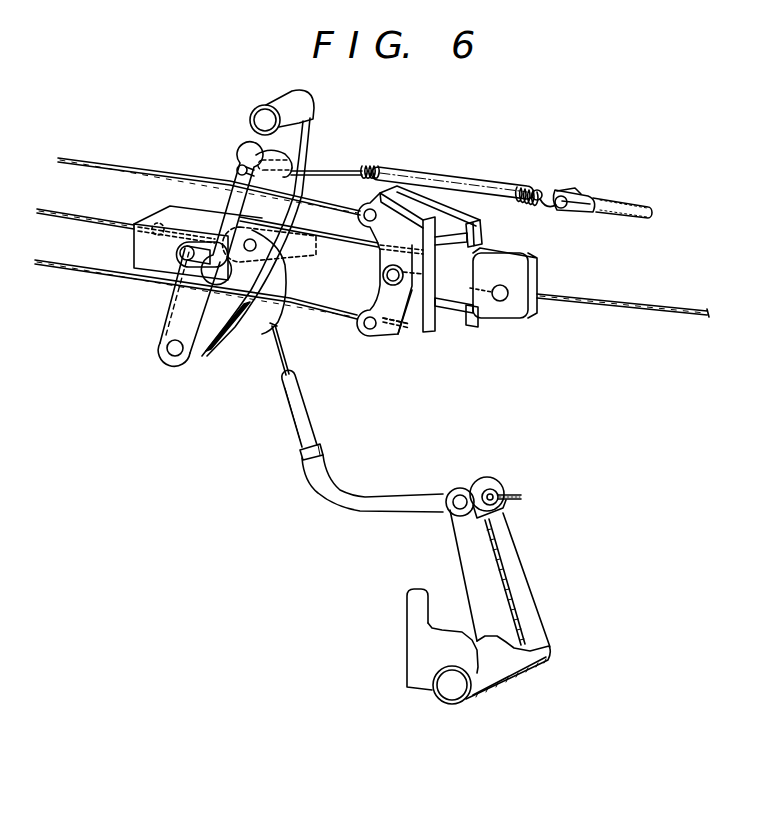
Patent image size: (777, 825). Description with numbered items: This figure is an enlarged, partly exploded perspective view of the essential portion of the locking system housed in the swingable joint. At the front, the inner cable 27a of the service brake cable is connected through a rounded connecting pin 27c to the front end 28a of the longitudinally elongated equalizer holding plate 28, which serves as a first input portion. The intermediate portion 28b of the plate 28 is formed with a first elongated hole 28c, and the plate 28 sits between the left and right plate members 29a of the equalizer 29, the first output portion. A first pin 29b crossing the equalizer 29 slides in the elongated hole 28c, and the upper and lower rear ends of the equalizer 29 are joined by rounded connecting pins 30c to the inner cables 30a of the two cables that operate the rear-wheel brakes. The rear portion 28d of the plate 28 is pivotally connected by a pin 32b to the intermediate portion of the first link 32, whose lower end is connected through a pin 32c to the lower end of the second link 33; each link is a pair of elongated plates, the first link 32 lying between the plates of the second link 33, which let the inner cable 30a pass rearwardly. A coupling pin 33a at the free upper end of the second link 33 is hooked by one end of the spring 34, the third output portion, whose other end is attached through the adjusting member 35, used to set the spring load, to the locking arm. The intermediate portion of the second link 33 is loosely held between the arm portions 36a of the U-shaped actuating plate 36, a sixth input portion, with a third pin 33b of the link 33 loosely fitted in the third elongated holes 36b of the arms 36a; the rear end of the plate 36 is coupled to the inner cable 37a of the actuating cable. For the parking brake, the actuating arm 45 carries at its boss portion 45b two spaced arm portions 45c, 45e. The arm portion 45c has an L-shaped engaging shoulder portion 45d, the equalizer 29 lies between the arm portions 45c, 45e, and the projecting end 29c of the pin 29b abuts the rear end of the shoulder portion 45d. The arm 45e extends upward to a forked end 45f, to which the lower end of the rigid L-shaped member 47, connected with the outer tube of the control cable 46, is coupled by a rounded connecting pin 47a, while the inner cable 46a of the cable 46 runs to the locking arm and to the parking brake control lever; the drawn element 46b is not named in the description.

The inner cable 27a is at (648, 306).
The rounded connecting pin 27c is at (500, 302).
The equalizer holding plate 28 is at (365, 260).
The front end 28a is at (530, 262).
The intermediate portion 28b is at (453, 323).
The first elongated hole 28c is at (455, 270).
The rear portion 28d is at (313, 247).
The equalizer 29 is at (393, 323).
The plate members 29a is at (440, 208).
The first pin 29b is at (363, 300).
The projecting end 29c is at (412, 295).
The inner cables 30a is at (140, 170).
The rounded connecting pins 30c is at (378, 210).
The first link 32 is at (217, 330).
The pin 32b is at (260, 297).
The pin 32c is at (177, 357).
The second link 33 is at (177, 303).
The coupling pin 33a is at (242, 165).
The third pin 33b is at (163, 283).
The spring 34 is at (533, 188).
The adjusting member 35 is at (630, 200).
The actuating plate 36 is at (140, 260).
The arm portions 36a is at (181, 243).
The third elongated holes 36b is at (217, 210).
The inner cable 37a is at (70, 216).
The actuating arm 45 is at (528, 602).
The boss portion 45b is at (498, 677).
The arm portion 45c is at (428, 655).
The engaging shoulder portion 45d is at (438, 625).
The arm portion 45e is at (520, 574).
The forked end 45f is at (495, 483).
The control cable 46 is at (301, 446).
The inner cable 46a is at (275, 331).
The cable tube 46b is at (293, 412).
The L-shaped member 47 is at (390, 512).
The rounded connecting pin 47a is at (460, 500).